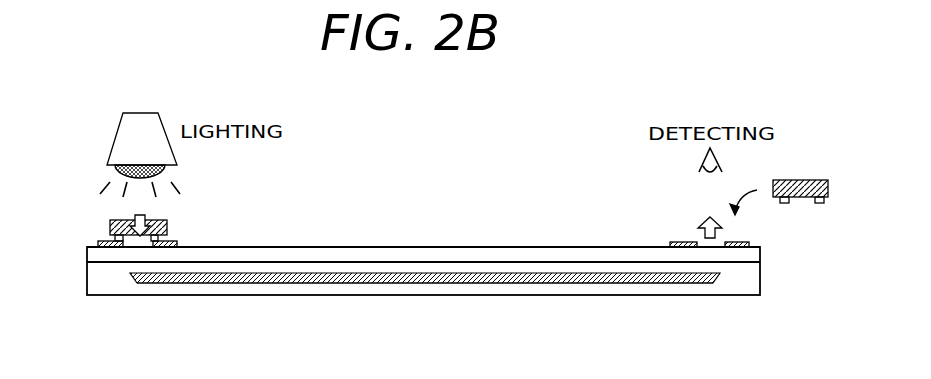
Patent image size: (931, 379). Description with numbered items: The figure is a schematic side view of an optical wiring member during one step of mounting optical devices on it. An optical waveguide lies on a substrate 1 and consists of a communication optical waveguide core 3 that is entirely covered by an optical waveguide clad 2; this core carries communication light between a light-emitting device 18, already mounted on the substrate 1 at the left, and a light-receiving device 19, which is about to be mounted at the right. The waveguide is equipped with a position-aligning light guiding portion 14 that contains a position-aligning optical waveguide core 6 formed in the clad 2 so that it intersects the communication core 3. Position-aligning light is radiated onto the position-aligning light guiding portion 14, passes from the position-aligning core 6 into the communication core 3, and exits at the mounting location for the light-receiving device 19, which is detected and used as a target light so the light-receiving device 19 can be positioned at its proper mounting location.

The substrate 1 is at (490, 248).
The optical waveguide clad 2 is at (438, 262).
The communication optical waveguide core 3 is at (381, 275).
The position-aligning optical waveguide core 6 is at (183, 284).
The position-aligning light guiding portion 14 is at (144, 301).
The light-emitting device 18 is at (108, 222).
The light-receiving device 19 is at (805, 203).